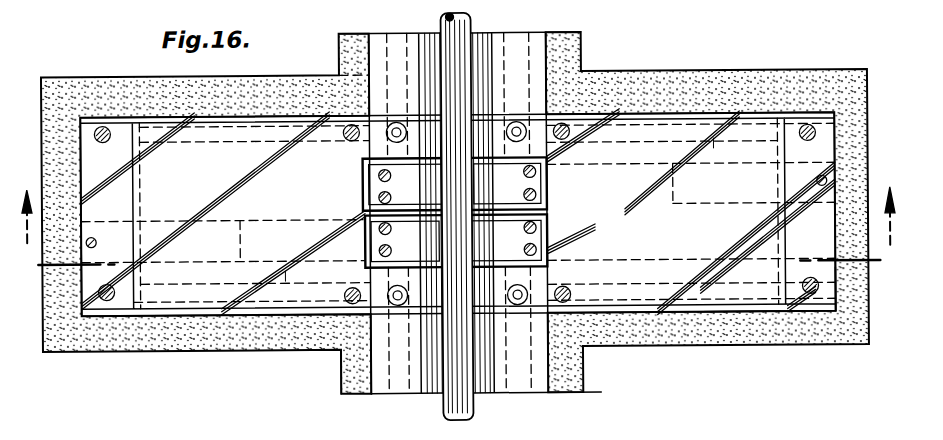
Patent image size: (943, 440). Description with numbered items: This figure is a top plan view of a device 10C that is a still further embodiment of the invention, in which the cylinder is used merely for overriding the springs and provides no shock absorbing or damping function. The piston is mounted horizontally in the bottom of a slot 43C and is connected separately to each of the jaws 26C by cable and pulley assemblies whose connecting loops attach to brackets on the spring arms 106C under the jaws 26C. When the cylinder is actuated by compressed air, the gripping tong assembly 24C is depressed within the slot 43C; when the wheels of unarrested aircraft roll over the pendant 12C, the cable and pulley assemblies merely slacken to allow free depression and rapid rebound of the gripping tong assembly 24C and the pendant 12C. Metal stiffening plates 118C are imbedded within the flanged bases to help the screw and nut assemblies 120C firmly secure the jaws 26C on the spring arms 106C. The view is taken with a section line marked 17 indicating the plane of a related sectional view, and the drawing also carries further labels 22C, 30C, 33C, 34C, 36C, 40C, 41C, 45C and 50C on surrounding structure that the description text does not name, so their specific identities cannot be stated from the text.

The device 10C is at (638, 101).
The pendant 12C is at (472, 405).
The section line 17- 17 is at (462, 233).
The concrete wall 22C is at (566, 65).
The gripping tong assembly 24C is at (364, 208).
The jaws 26C is at (417, 173).
The vertical member 30C is at (508, 53).
The concrete strip 33C is at (385, 358).
The rod sleeve 34C is at (437, 380).
The anchor bolt 36C is at (524, 125).
The vertical member 40C is at (405, 55).
The joint 41C is at (390, 106).
The slot 43C is at (832, 282).
The bottom frame member 45C is at (740, 303).
The concrete wall 50C is at (854, 109).
The spring arms 106C is at (713, 163).
The metal stiffening plates 118C is at (365, 240).
The screw and nut assemblies 120C is at (546, 245).